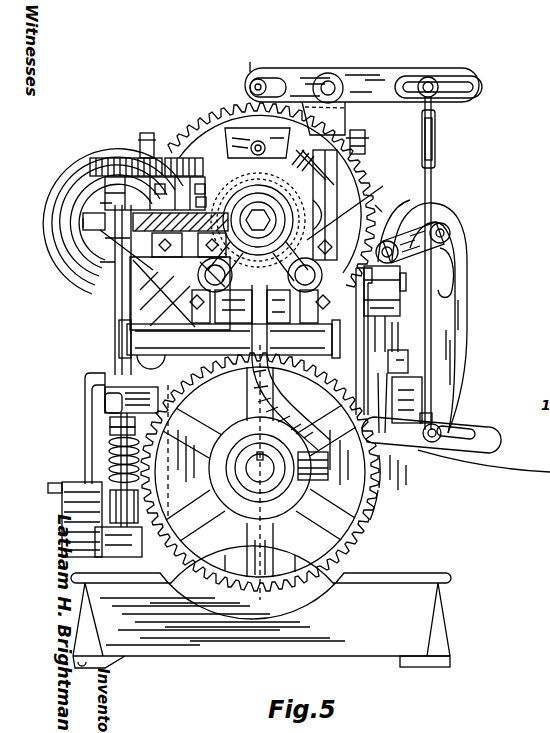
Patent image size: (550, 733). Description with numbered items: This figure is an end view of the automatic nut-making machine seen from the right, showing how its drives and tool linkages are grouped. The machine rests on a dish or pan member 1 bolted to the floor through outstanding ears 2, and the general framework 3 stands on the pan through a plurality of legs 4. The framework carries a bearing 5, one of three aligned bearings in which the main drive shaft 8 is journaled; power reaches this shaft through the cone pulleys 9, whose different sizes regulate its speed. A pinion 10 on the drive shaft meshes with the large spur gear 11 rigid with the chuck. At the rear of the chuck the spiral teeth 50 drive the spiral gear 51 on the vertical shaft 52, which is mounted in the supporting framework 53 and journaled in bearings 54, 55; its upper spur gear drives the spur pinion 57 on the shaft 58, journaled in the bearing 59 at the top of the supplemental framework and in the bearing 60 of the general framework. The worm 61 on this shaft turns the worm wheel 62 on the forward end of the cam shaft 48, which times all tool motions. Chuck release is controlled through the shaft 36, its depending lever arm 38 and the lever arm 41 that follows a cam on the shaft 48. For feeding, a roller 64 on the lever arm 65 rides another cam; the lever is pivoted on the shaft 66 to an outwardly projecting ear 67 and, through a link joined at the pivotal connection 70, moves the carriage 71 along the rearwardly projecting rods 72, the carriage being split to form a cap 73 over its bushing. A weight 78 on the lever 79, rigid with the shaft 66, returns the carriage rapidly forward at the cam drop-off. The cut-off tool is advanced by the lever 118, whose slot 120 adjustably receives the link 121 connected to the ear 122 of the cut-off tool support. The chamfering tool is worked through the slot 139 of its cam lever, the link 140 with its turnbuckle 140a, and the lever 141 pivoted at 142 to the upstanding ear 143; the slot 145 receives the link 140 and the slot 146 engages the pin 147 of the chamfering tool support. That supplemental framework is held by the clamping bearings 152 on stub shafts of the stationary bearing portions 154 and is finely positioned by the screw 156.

The dish or pan member 1 is at (376, 640).
The outstanding ears 2 is at (432, 677).
The general framework 3 is at (342, 282).
The legs 4 is at (405, 545).
The bearing 5 is at (83, 223).
The main drive shaft 8 is at (110, 243).
The cone pulleys 9 is at (90, 185).
The pinion 10 is at (105, 265).
The large spur gear 11 is at (375, 205).
The shaft 36 is at (402, 287).
The depending lever arm 38 is at (385, 340).
The lever arm 41 is at (405, 380).
The shaft 48 is at (378, 490).
The spiral teeth 50 is at (243, 278).
The spiral gear 51 is at (200, 200).
The vertical shaft 52 is at (173, 255).
The supporting framework 53 is at (120, 234).
The bearing 54 is at (130, 232).
The bearing 55 is at (186, 192).
The spur pinion 57 is at (112, 158).
The shaft 58 is at (120, 330).
The bearing 59 is at (132, 180).
The bearing 60 is at (100, 574).
The worm 61 is at (109, 458).
The worm wheel 62 is at (378, 506).
The roller 64 is at (328, 466).
The lever arm 65 is at (272, 396).
The shaft 66 is at (163, 158).
The outwardly projecting ear 67 is at (340, 318).
The pivotal connection 70 is at (270, 205).
The carriage 71 is at (300, 287).
The rearwardly projecting rods 72 is at (325, 285).
The cap 73 is at (259, 185).
The weight 78 is at (75, 500).
The lever 79 is at (85, 398).
The lever 118 is at (403, 454).
The slot 120 is at (440, 262).
The link 121 is at (455, 243).
The ear 122 is at (405, 212).
The slot 139 is at (489, 441).
The link 140 is at (432, 180).
The turnbuckle 140a is at (435, 138).
The lever 141 is at (383, 72).
The pivot 142 is at (330, 74).
The upstanding ear 143 is at (335, 108).
The slot 145 is at (452, 80).
The slot 146 is at (262, 78).
The pin 147 is at (252, 65).
The clamping bearings 152 is at (366, 139).
The stationary bearing portions 154 is at (176, 134).
The screw 156 is at (256, 142).